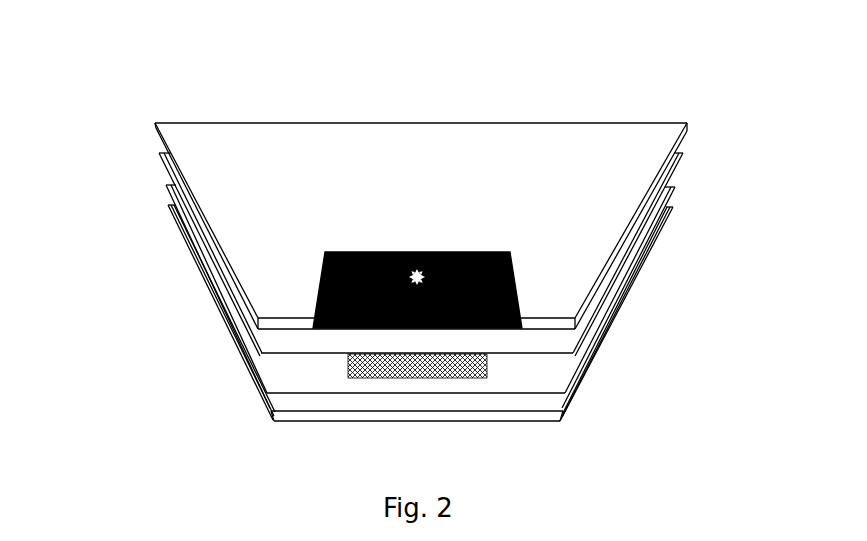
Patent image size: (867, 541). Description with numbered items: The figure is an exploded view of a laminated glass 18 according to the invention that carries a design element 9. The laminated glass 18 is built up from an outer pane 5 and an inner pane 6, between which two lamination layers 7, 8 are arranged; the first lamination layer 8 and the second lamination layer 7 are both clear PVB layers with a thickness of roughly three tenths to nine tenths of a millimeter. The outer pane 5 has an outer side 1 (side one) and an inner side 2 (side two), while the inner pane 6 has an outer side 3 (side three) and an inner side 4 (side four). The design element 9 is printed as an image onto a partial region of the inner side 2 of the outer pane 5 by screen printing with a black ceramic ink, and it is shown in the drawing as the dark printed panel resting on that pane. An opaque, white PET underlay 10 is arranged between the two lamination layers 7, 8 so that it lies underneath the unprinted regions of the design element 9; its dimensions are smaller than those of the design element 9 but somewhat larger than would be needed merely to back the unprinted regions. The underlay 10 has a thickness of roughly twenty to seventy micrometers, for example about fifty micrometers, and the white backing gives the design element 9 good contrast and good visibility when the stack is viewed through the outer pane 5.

The outer side of the outer pane 1 is at (170, 133).
The inner side of the outer pane 2 is at (162, 148).
The outer side of the inner pane 3 is at (288, 405).
The inner side of the inner pane 4 is at (287, 420).
The outer pane 5 is at (687, 128).
The inner pane 6 is at (668, 208).
The second lamination layer 7 is at (673, 190).
The first lamination layer 8 is at (681, 160).
The design element 9 is at (437, 250).
The opaque underlay 10 is at (487, 375).
The laminated glass 18 is at (410, 93).